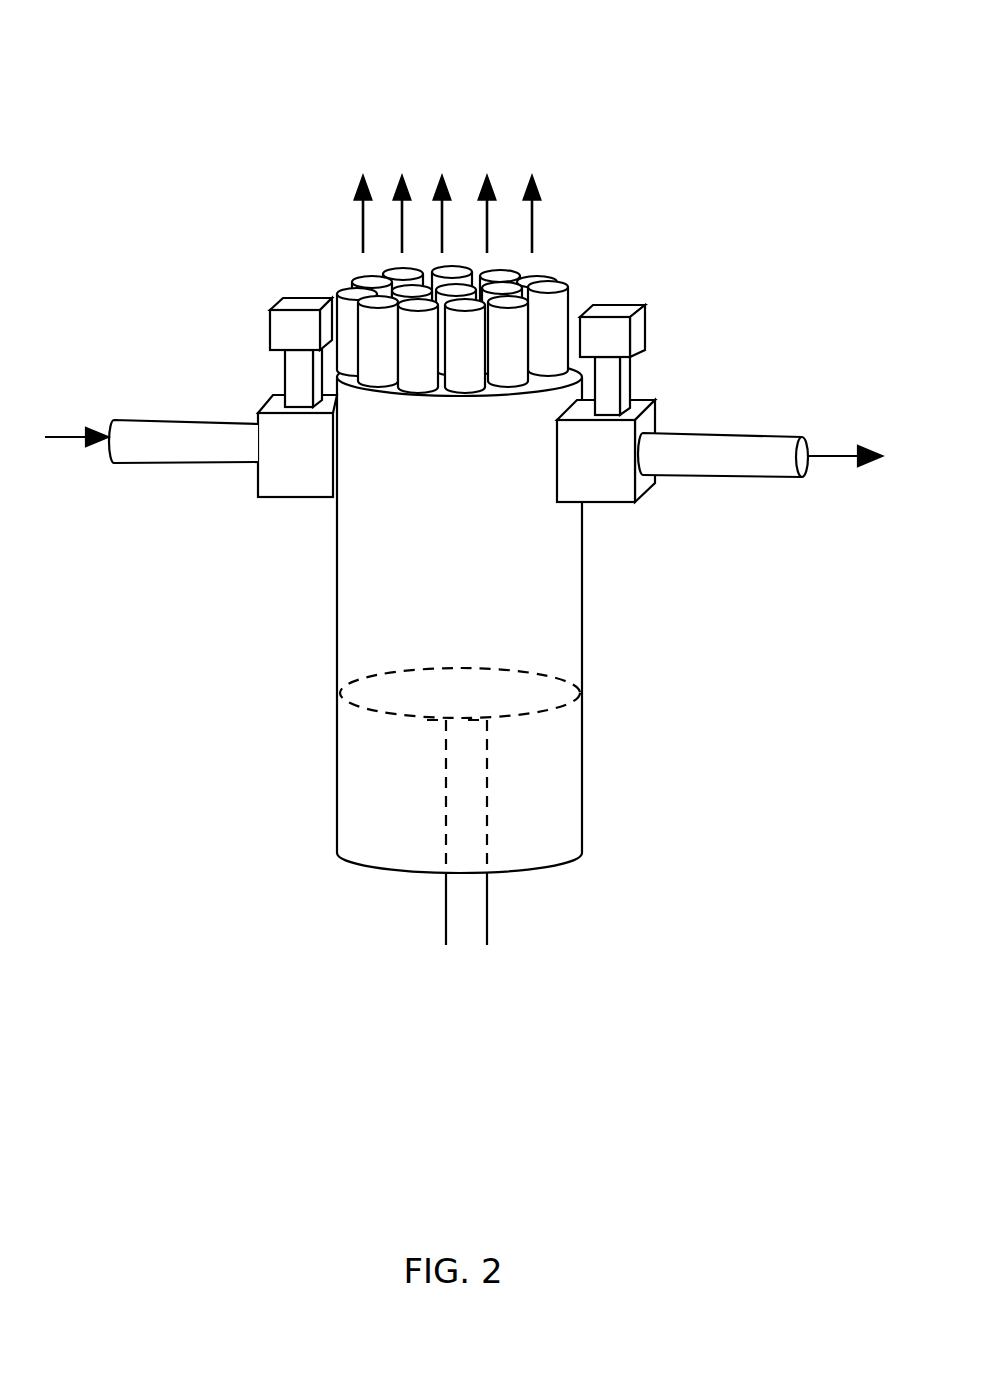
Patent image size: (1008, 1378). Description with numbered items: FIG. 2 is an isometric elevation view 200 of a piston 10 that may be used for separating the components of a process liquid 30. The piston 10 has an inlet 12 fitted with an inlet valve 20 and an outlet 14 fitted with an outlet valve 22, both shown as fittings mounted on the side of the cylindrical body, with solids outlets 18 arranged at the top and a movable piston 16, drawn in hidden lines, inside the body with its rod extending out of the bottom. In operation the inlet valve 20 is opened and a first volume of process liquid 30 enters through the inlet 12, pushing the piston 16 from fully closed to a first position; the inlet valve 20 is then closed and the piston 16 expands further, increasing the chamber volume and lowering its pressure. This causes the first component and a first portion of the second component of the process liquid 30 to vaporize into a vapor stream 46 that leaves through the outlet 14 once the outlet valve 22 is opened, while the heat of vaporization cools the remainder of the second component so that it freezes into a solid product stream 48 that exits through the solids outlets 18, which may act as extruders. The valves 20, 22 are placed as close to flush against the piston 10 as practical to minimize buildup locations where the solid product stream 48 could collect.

The heat exchanger system 200 is at (92, 66).
The piston 10 is at (337, 593).
The inlet 12 is at (200, 463).
The outlet 14 is at (753, 433).
The piston 16 is at (568, 680).
The solids outlets 18 is at (566, 290).
The inlet valve 20 is at (258, 412).
The outlet valve 22 is at (656, 403).
The process liquid 30 is at (59, 435).
The vapor stream 46 is at (865, 460).
The solid product stream 48 is at (447, 197).